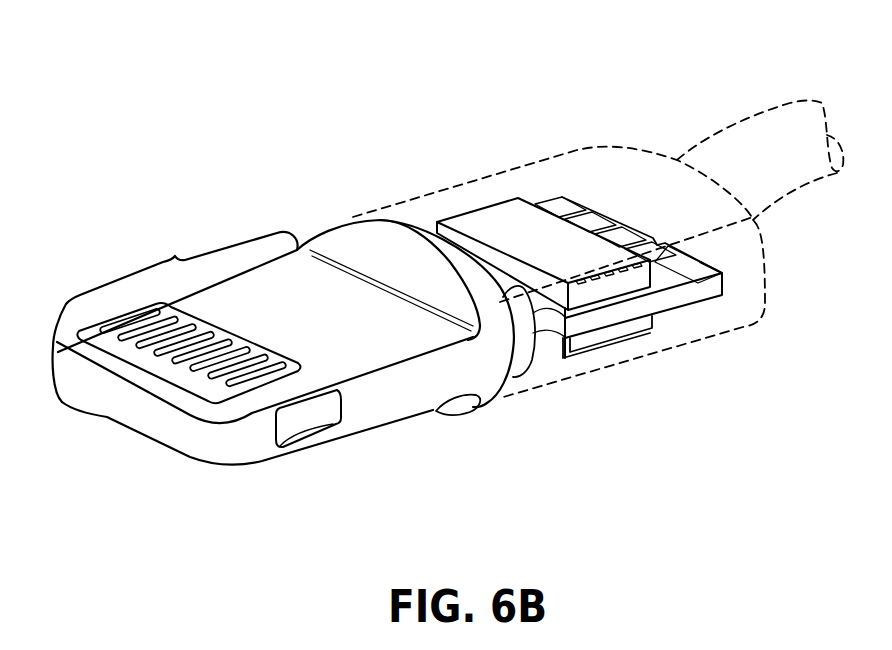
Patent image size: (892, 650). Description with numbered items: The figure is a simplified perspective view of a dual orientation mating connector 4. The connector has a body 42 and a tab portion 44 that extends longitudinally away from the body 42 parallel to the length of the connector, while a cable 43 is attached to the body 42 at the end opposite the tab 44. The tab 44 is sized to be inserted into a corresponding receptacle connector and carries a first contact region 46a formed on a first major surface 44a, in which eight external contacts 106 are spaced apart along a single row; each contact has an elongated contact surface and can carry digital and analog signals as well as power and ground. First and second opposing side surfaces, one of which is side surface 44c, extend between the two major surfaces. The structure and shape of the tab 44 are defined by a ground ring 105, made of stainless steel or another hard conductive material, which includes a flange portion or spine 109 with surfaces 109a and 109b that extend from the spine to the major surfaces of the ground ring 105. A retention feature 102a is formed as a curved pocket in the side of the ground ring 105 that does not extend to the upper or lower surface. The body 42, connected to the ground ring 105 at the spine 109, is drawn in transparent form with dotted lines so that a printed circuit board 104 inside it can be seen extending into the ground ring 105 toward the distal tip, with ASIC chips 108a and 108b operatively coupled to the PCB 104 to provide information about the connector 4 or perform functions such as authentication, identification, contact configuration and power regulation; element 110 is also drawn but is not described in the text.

The mating connector 4 is at (173, 126).
The body 42 is at (517, 180).
The cable 43 is at (745, 148).
The tab portion 44 is at (263, 344).
The first major surface 44a is at (338, 328).
The first side surface 44c is at (417, 408).
The first contact region 46a is at (132, 355).
The retention feature 102a is at (330, 413).
The printed circuit board 104 is at (690, 300).
The ground ring 105 is at (75, 392).
The external contacts 106 is at (190, 415).
The ASIC chip 108a is at (477, 223).
The ASIC chip 108b is at (587, 342).
The spine 109 is at (357, 230).
The spine surface 109a is at (360, 253).
The spine surface 109b is at (457, 410).
The contact terminals 110 is at (690, 267).